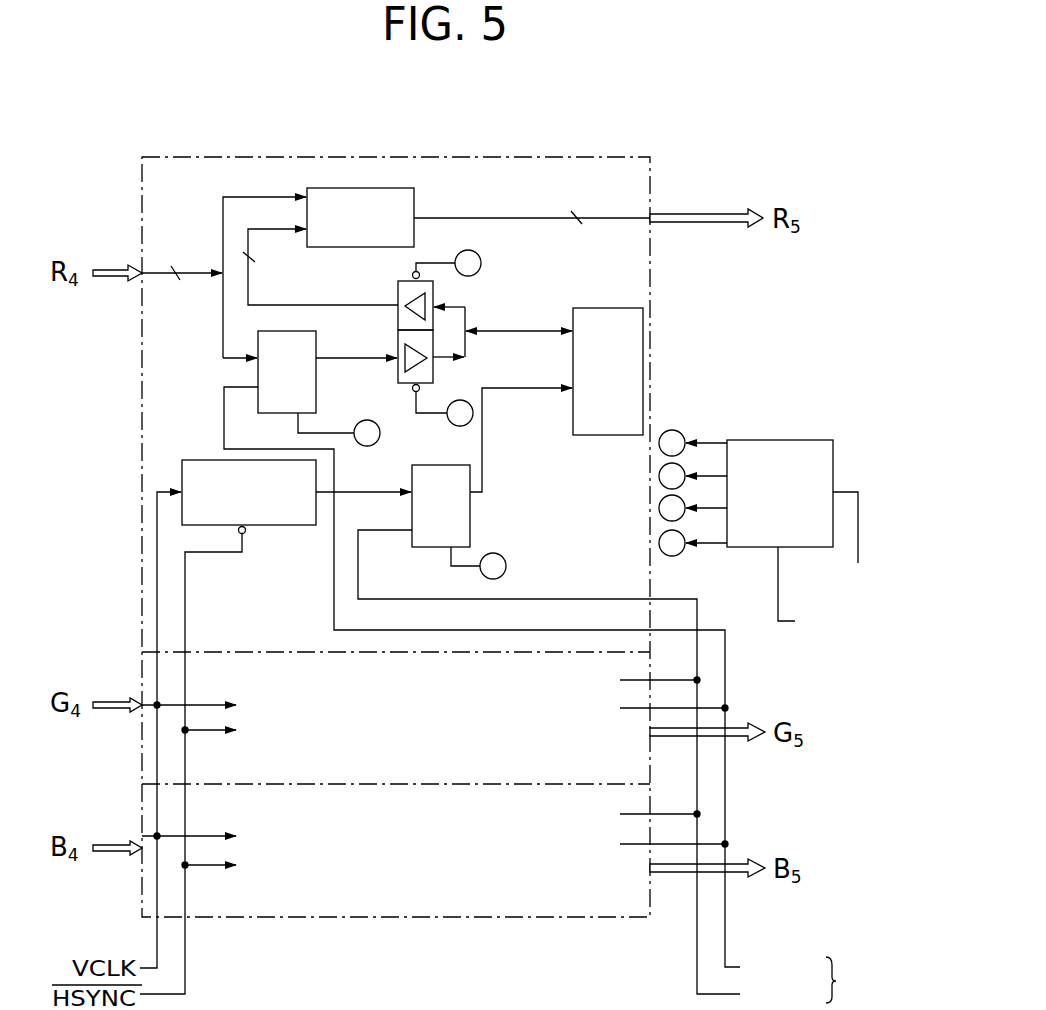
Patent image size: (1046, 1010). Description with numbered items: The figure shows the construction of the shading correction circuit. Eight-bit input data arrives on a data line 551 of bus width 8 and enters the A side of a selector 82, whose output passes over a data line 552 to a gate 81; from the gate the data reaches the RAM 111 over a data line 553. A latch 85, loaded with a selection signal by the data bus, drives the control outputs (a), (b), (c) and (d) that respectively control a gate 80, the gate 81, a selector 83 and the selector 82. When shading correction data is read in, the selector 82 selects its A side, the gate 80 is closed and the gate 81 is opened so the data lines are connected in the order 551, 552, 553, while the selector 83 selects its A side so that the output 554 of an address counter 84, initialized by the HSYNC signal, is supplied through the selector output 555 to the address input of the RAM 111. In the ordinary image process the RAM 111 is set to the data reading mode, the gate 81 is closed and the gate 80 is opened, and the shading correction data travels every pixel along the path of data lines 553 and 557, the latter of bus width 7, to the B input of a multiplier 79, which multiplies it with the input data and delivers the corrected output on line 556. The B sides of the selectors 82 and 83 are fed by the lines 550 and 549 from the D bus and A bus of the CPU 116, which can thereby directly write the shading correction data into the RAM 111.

The multiplier 79 is at (378, 215).
The gate 80 is at (418, 290).
The gate 81 is at (422, 366).
The selector 82 is at (319, 376).
The selector 83 is at (459, 509).
The address counter 84 is at (249, 511).
The latch 85 is at (793, 523).
The RAM 111 is at (608, 388).
The CPU 116 is at (837, 981).
The address bus line from CPU 549 is at (545, 749).
The data bus line from CPU 550 is at (485, 677).
The data line 551 is at (239, 271).
The data line 552 is at (356, 375).
The data line 553 is at (519, 335).
The address counter output 554 is at (363, 479).
The RAM address line 555 is at (512, 430).
The multiplier output R5 556 is at (532, 204).
The data line 557 is at (320, 252).
The 7-bit bus width 7 is at (258, 263).
The 8-bit bus width 8 is at (380, 263).